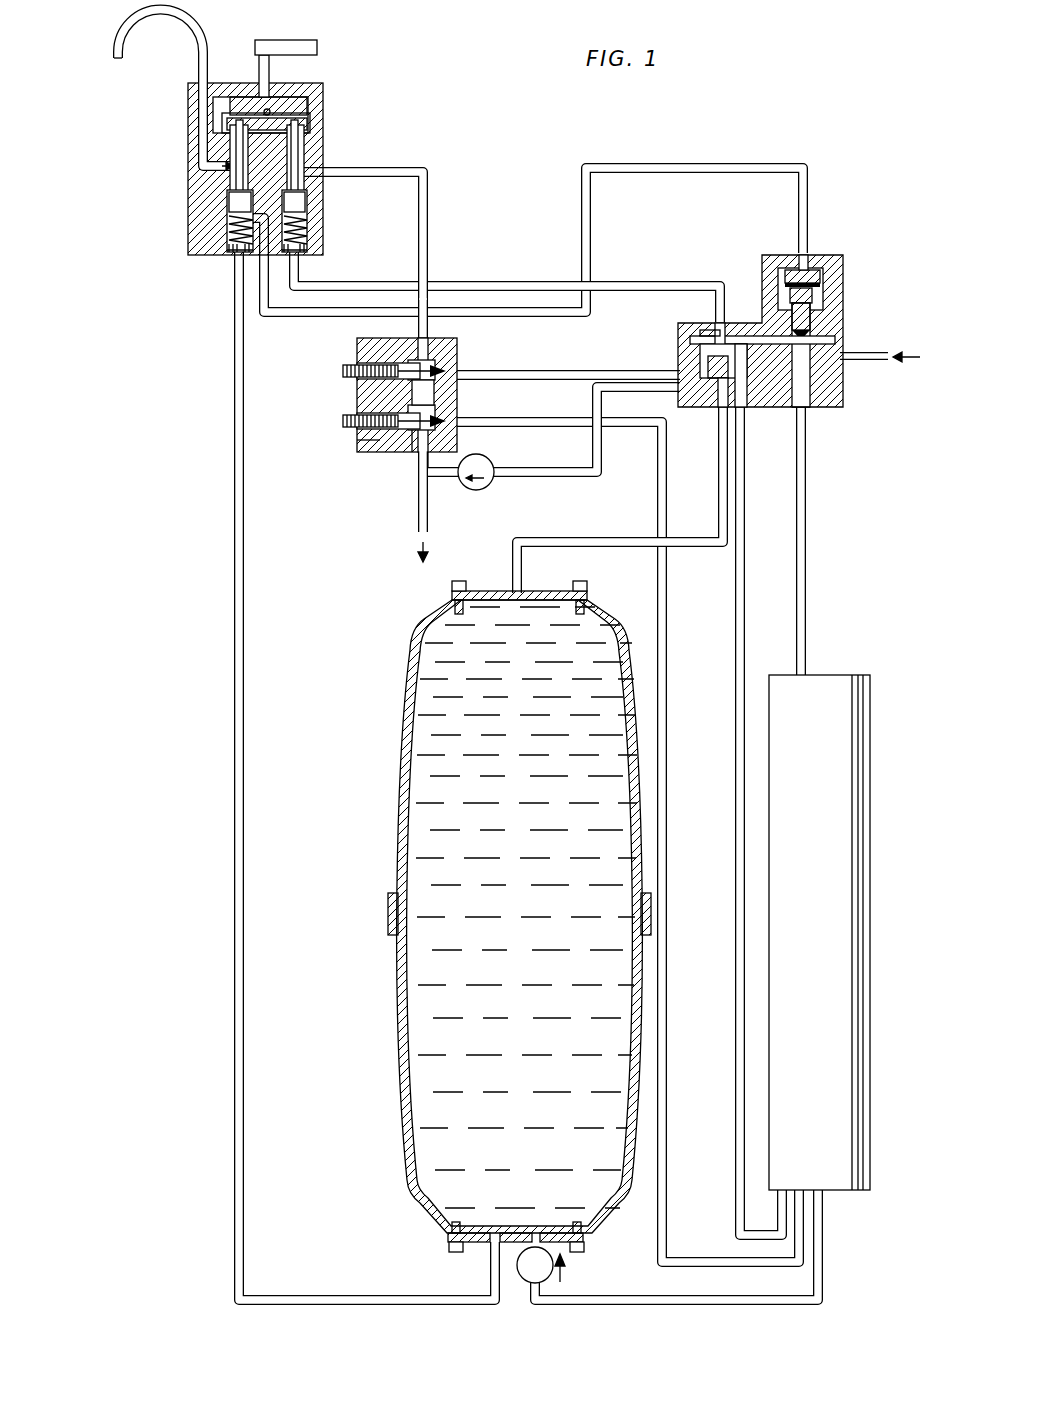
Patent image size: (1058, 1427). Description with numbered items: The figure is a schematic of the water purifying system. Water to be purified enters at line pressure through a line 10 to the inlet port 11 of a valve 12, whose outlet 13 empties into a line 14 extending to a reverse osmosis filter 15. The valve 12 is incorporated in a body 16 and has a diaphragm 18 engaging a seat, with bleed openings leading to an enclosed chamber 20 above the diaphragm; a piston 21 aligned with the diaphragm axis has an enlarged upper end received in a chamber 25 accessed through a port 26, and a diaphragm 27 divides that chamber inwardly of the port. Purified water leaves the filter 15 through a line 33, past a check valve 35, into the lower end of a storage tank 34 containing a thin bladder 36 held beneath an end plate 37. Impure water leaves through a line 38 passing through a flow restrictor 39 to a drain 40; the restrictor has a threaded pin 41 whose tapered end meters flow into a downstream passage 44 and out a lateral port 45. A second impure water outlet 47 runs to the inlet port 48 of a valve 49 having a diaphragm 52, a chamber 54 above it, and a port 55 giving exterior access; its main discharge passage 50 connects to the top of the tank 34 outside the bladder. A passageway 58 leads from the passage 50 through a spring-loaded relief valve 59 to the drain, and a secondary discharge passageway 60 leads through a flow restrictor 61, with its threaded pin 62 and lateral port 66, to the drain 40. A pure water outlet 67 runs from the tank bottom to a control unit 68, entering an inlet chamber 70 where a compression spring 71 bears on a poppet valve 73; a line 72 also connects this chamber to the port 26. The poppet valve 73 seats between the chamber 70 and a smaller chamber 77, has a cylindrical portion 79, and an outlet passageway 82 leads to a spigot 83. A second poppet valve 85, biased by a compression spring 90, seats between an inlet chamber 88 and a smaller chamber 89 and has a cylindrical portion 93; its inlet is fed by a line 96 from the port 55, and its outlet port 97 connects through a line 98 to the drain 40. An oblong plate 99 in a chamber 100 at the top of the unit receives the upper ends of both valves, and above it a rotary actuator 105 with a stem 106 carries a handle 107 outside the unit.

The line 10 is at (880, 361).
The inlet port 11 is at (812, 343).
The valve 12 is at (858, 395).
The outlet 13 is at (801, 408).
The line 14 is at (807, 540).
The reverse osmosis filter 15 is at (870, 775).
The body 16 is at (748, 263).
The diaphragm 18 is at (788, 344).
The enclosed chamber 20 is at (812, 320).
The piston 21 is at (826, 292).
The chamber 25 is at (824, 274).
The port 26 is at (814, 270).
The diaphragm 27 is at (801, 262).
The line 33 is at (824, 1255).
The storage tank 34 is at (404, 1086).
The check valve 35 is at (530, 1286).
The bladder 36 is at (418, 1074).
The end plate 37 is at (490, 1250).
The line 38 is at (665, 1195).
The flow restrictor 39 is at (458, 404).
The drain 40 is at (418, 525).
The threaded pin 41 is at (358, 441).
The passage 44 is at (412, 450).
The lateral port 45 is at (416, 458).
The second impure water outlet 47 is at (735, 1153).
The inlet port 48 is at (745, 391).
The valve 49 is at (690, 349).
The main discharge passage 50 is at (611, 543).
The diaphragm 52 is at (692, 338).
The chamber 54 is at (712, 334).
The port 55 is at (724, 323).
The passageway 58 is at (571, 475).
The spring-loaded relief valve 59 is at (480, 491).
The secondary discharge passageway 60 is at (571, 375).
The flow restrictor 61 is at (458, 346).
The threaded pin 62 is at (360, 367).
The lateral port 66 is at (412, 392).
The pure water outlet 67 is at (234, 838).
The control unit 68 is at (178, 206).
The inlet chamber 70 is at (232, 233).
The compression spring 71 is at (232, 251).
The line 72 is at (688, 168).
The poppet valve 73 is at (222, 168).
The chamber 77 is at (228, 192).
The cylindrical portion 79 is at (243, 160).
The outlet passageway 82 is at (207, 153).
The spigot 83 is at (112, 44).
The second poppet valve 85 is at (306, 205).
The inlet chamber 88 is at (303, 226).
The chamber 89 is at (304, 186).
The compression spring 90 is at (303, 253).
The cylindrical portion 93 is at (308, 125).
The line 96 is at (478, 290).
The outlet port 97 is at (323, 171).
The line 98 is at (428, 209).
The oblong plate 99 is at (312, 118).
The chamber 100 is at (312, 100).
The rotary actuator 105 is at (296, 97).
The stem 106 is at (259, 67).
The handle 107 is at (302, 40).